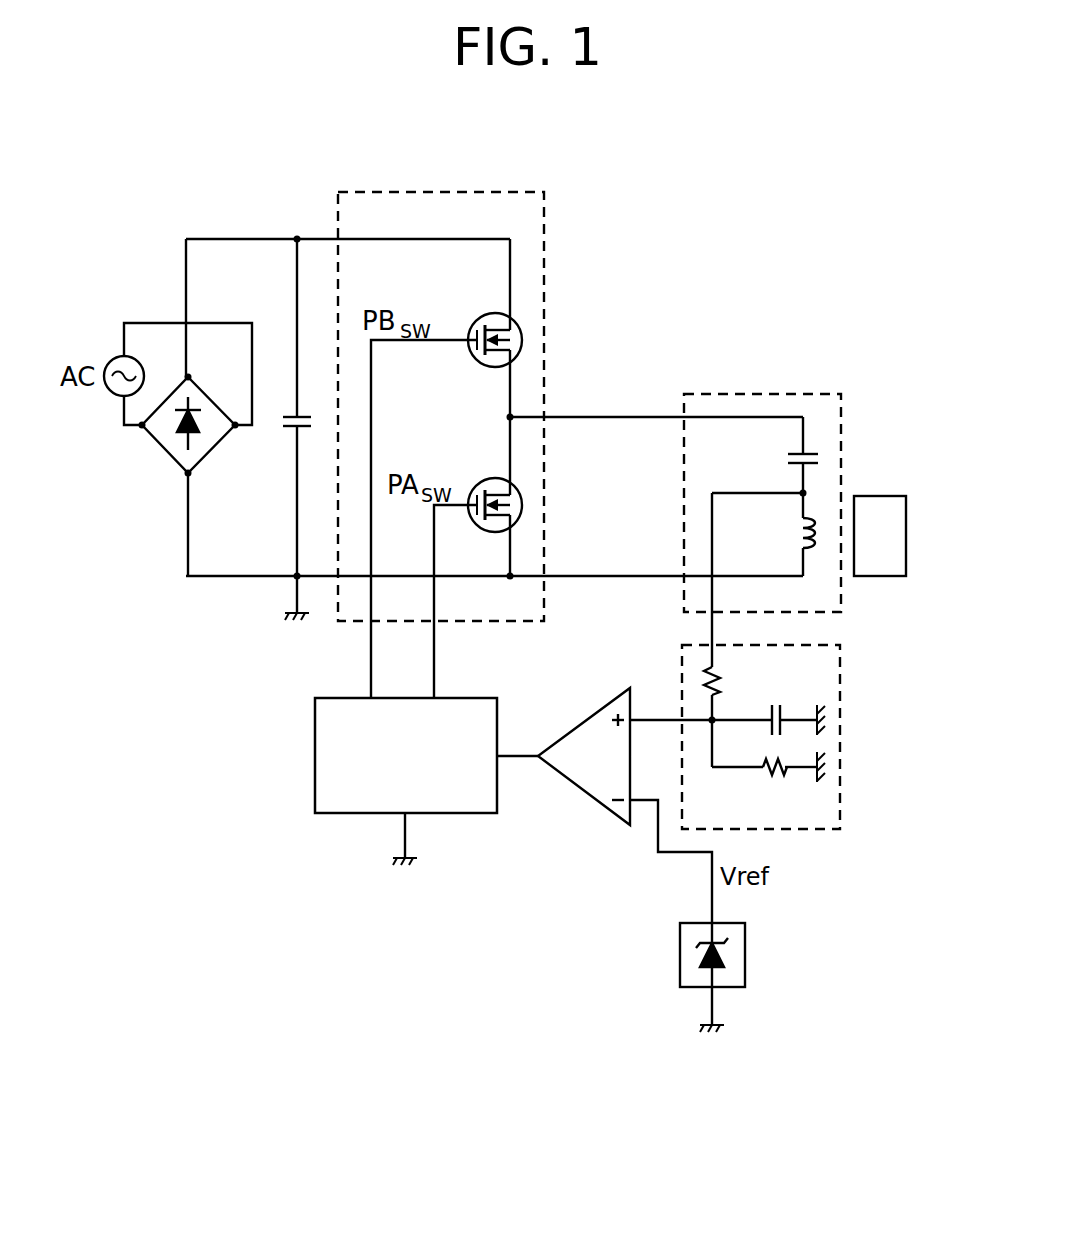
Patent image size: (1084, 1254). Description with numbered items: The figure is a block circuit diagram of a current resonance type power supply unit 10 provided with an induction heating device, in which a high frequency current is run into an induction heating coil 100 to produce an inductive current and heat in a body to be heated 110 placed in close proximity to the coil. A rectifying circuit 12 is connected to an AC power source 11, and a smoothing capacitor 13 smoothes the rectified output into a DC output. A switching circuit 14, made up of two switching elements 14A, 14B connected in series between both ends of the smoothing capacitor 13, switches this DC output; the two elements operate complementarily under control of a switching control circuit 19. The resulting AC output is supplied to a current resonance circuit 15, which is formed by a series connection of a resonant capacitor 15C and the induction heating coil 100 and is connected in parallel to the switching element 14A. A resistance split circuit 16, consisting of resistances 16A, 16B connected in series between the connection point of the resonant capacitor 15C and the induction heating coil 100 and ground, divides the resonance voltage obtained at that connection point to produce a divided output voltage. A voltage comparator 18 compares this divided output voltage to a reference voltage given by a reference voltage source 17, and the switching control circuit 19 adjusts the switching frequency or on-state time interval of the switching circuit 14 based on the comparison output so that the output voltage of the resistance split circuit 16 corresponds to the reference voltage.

The current resonance type power supply unit 10 is at (389, 964).
The AC power source 11 is at (108, 358).
The rectifying circuit 12 is at (163, 459).
The smoothing capacitor 13 is at (284, 429).
The switching circuit 14 is at (544, 226).
The switching element 14A is at (482, 483).
The switching element 14B is at (476, 318).
The current resonance circuit 15 is at (763, 392).
The resonant capacitor 15C is at (790, 458).
The induction heating coil 100 is at (798, 534).
The body to be heated 110 is at (892, 495).
The resistance split circuit 16 is at (840, 690).
The resistance 16A is at (720, 675).
The resistance 16B is at (767, 778).
The reference voltage source 17 is at (746, 948).
The voltage comparator 18 is at (582, 796).
The switching control circuit 19 is at (315, 730).